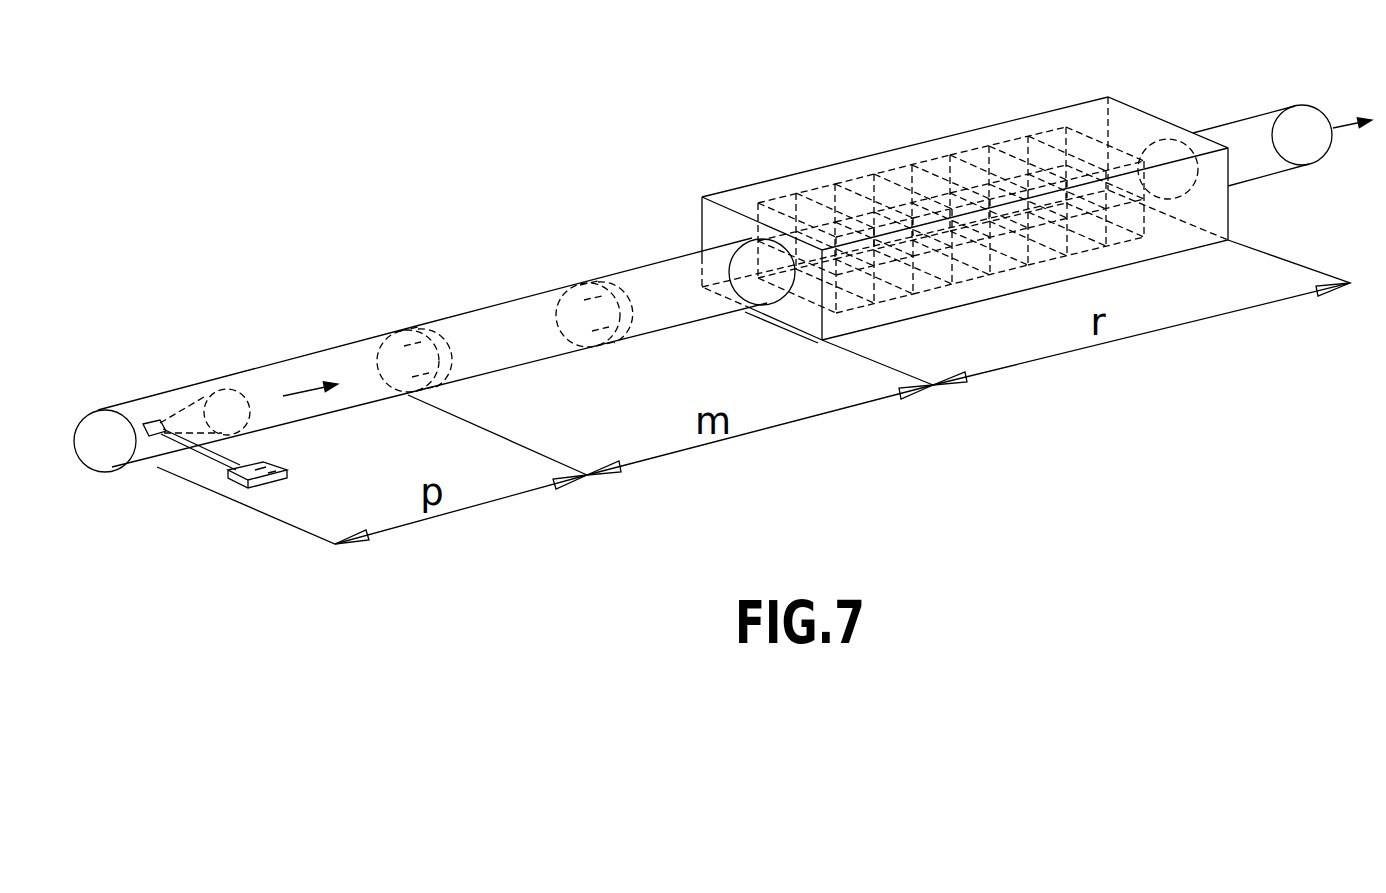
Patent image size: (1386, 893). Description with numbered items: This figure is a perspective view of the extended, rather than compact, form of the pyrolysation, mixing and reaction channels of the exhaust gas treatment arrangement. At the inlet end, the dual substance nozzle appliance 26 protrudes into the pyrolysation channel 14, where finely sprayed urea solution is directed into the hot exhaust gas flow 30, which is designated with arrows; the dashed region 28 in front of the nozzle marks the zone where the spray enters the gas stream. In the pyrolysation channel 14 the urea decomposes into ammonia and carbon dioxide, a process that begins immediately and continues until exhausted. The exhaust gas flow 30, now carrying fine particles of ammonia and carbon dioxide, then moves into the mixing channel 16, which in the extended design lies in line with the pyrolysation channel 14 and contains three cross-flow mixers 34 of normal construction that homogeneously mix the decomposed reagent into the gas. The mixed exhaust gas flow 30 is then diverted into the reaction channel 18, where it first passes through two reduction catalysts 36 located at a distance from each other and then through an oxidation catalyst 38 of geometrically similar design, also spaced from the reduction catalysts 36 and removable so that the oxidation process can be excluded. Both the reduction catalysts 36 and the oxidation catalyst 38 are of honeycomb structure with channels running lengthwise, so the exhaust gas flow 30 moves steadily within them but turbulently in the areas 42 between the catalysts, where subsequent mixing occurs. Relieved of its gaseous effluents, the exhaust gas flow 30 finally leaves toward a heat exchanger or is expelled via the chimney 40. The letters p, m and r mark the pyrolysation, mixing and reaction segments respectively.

The pyrolysation channel 14 is at (135, 408).
The mixing channel 16 is at (510, 318).
The reaction channel 18 is at (735, 203).
The dual substance nozzle appliance 26 is at (242, 482).
The detection region 28 is at (217, 400).
The exhaust gas flow 30 is at (298, 397).
The cross-flow mixer 34 is at (430, 323).
The reduction catalyst 36 is at (797, 187).
The oxidation catalyst 38 is at (985, 137).
The chimney 40 is at (1242, 130).
The areas between the catalysts 42 is at (893, 173).